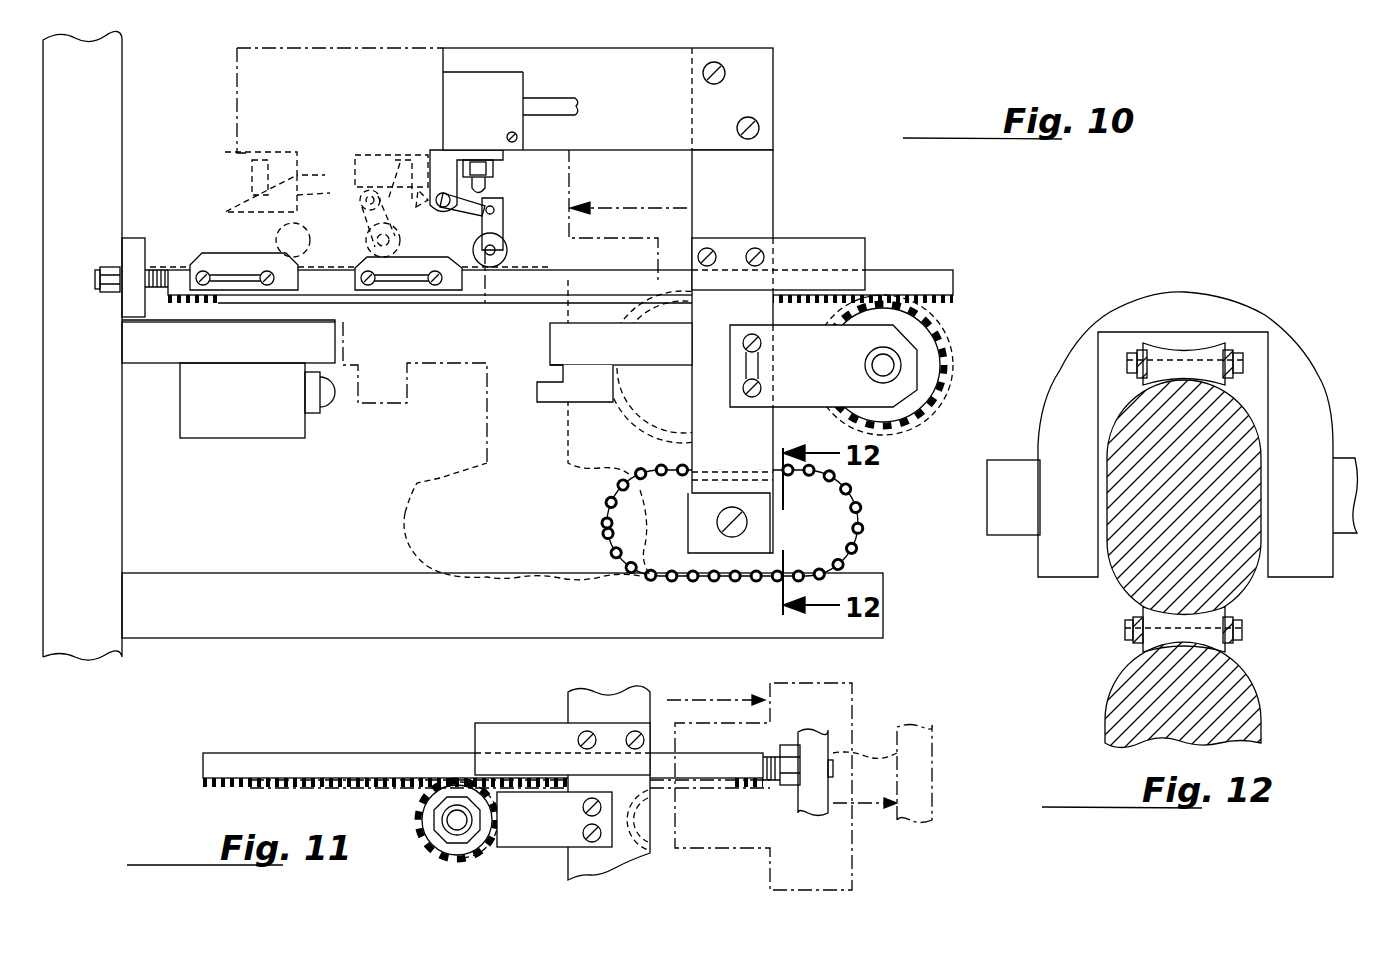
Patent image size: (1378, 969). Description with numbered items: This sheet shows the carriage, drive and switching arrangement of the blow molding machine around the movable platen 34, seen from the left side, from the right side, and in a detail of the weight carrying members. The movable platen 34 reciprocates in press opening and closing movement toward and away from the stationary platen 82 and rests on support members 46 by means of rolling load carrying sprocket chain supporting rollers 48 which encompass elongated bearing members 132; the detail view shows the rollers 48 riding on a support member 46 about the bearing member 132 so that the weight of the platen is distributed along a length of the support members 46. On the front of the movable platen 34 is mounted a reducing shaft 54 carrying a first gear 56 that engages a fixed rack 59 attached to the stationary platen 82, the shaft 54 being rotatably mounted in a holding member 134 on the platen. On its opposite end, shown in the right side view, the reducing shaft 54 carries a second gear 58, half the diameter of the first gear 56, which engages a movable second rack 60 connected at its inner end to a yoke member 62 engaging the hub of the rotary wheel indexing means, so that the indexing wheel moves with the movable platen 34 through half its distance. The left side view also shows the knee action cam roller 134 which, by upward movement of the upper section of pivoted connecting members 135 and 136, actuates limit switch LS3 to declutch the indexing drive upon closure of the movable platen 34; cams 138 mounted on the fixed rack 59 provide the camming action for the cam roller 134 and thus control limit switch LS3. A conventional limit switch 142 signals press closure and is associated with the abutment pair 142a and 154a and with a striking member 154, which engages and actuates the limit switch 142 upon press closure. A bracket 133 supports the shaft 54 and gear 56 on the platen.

In FIG. 10, the stationary platen 82 is at (108, 482).
In FIG. 10, the support members 46 is at (285, 590).
In FIG. 12, the support members 46 is at (1142, 690).
In FIG. 10, the fixed rack 59 is at (178, 273).
In FIG. 10, the cams 138 is at (355, 288).
In FIG. 10, the limit switch 142 is at (333, 413).
In FIG. 10, the abutment 142a is at (345, 345).
In FIG. 10, the limit switch LS3 is at (300, 177).
In FIG. 10, the pivoted connecting member 135 is at (405, 180).
In FIG. 10, the pivoted connecting member 136 is at (404, 234).
In FIG. 10, the knee action cam roller 134 is at (305, 255).
In FIG. 10, the reducing shaft 54 is at (903, 365).
In FIG. 11, the reducing shaft 54 is at (460, 822).
In FIG. 10, the first gear 56 is at (933, 325).
In FIG. 10, the sprocket chain supporting rollers 48 is at (857, 522).
In FIG. 12, the sprocket chain supporting rollers 48 is at (1190, 353).
In FIG. 10, the elongated bearing members 132 is at (672, 533).
In FIG. 12, the elongated bearing members 132 is at (1142, 525).
In FIG. 10, the movable platen 34 is at (752, 198).
In FIG. 11, the movable platen 34 is at (568, 698).
In FIG. 10, the bracket 133 is at (913, 397).
In FIG. 10, the abutment 154a is at (550, 327).
In FIG. 10, the striking member 154 is at (537, 392).
In FIG. 11, the second rack 60 is at (433, 773).
In FIG. 11, the second gear 58 is at (418, 812).
In FIG. 11, the yoke member 62 is at (822, 735).